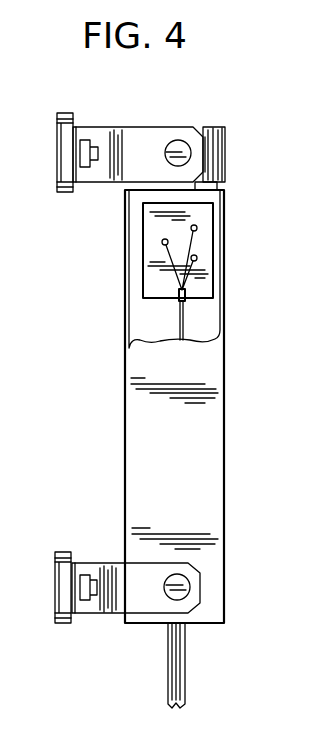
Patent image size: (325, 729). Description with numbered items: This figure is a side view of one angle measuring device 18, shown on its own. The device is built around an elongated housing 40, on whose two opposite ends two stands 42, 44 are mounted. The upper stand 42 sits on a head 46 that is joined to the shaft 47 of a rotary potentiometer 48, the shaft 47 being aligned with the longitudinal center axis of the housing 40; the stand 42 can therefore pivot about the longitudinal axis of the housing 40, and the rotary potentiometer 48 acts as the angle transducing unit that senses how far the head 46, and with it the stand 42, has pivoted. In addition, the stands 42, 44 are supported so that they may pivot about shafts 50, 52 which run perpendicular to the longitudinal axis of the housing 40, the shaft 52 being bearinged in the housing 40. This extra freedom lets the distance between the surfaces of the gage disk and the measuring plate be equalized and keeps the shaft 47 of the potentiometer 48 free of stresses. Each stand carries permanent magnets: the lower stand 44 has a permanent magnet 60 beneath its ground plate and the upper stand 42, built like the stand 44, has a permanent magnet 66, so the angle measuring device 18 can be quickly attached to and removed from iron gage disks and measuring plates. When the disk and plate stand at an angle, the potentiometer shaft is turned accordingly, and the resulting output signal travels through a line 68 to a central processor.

The angle measuring device 18 is at (117, 446).
The housing 40 is at (206, 479).
The stand 42 is at (113, 185).
The stand 44 is at (118, 562).
The head 46 is at (213, 127).
The shaft 47 is at (214, 185).
The rotary potentiometer 48 is at (205, 273).
The shaft 50 is at (174, 142).
The shaft 52 is at (185, 593).
The permanent magnet 60 is at (58, 585).
The permanent magnet 66 is at (58, 193).
The line 68 is at (186, 682).